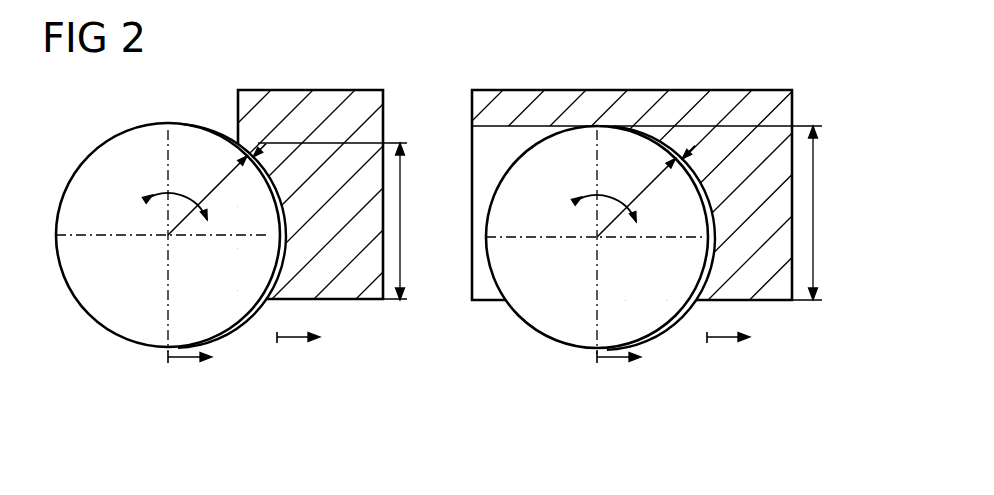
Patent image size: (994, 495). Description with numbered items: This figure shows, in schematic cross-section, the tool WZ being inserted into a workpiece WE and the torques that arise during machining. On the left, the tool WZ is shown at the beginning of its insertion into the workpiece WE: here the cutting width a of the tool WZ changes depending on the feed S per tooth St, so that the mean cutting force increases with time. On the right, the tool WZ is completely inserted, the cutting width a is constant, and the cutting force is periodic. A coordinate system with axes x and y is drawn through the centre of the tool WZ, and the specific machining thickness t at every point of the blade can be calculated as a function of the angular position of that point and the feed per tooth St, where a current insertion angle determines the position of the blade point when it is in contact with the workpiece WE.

The tool WZ is at (117, 158).
The workpiece WE is at (336, 107).
The machining thickness t is at (255, 170).
The cutting width a is at (400, 215).
The feed S is at (290, 342).
The feed per tooth St is at (182, 362).
The x axis x is at (379, 250).
The y axis y is at (394, 242).